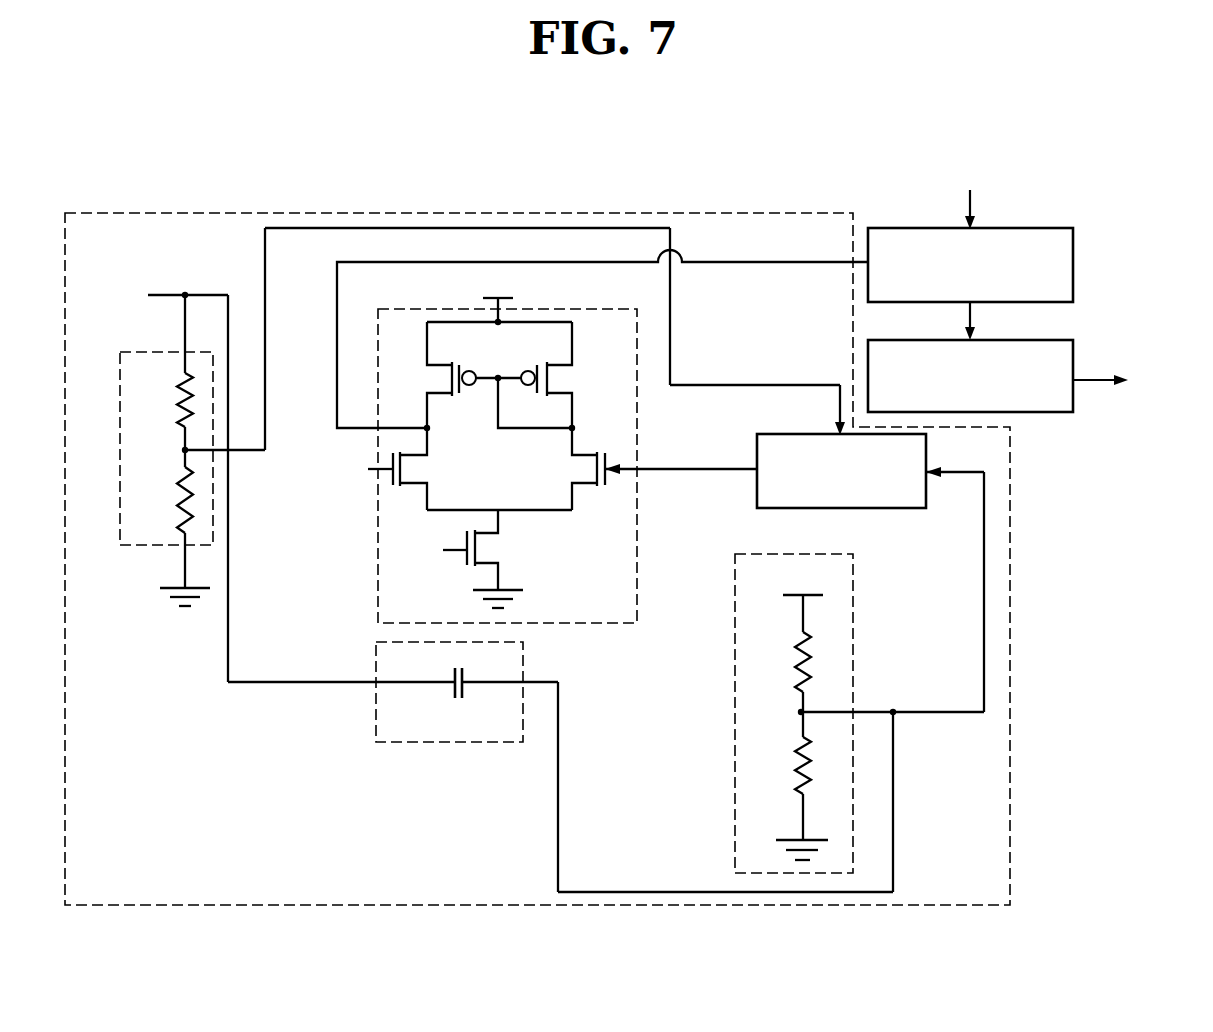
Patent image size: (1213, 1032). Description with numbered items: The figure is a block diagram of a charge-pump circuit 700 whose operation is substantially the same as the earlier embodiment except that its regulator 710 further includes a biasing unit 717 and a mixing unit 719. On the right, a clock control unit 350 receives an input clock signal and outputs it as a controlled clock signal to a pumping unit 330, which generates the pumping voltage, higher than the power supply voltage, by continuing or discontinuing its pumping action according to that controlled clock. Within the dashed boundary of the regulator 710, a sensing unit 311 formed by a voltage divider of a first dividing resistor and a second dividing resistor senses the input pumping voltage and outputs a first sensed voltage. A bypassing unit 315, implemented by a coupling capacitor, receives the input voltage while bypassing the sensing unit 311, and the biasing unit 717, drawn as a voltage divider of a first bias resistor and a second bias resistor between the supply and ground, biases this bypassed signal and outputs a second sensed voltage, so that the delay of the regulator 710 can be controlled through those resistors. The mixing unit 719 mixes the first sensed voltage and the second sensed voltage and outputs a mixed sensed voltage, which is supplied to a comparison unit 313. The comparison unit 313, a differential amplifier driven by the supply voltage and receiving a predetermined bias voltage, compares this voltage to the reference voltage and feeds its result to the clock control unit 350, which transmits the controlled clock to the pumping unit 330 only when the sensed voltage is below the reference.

The charge-pump circuit 700 is at (1082, 140).
The regulator 710 is at (400, 212).
The sensing unit 311 is at (131, 546).
The comparison unit 313 is at (378, 570).
The bypassing unit 315 is at (376, 718).
The biasing unit 717 is at (735, 700).
The mixing unit 719 is at (899, 509).
The clock control unit 350 is at (1074, 245).
The pumping unit 330 is at (1074, 403).